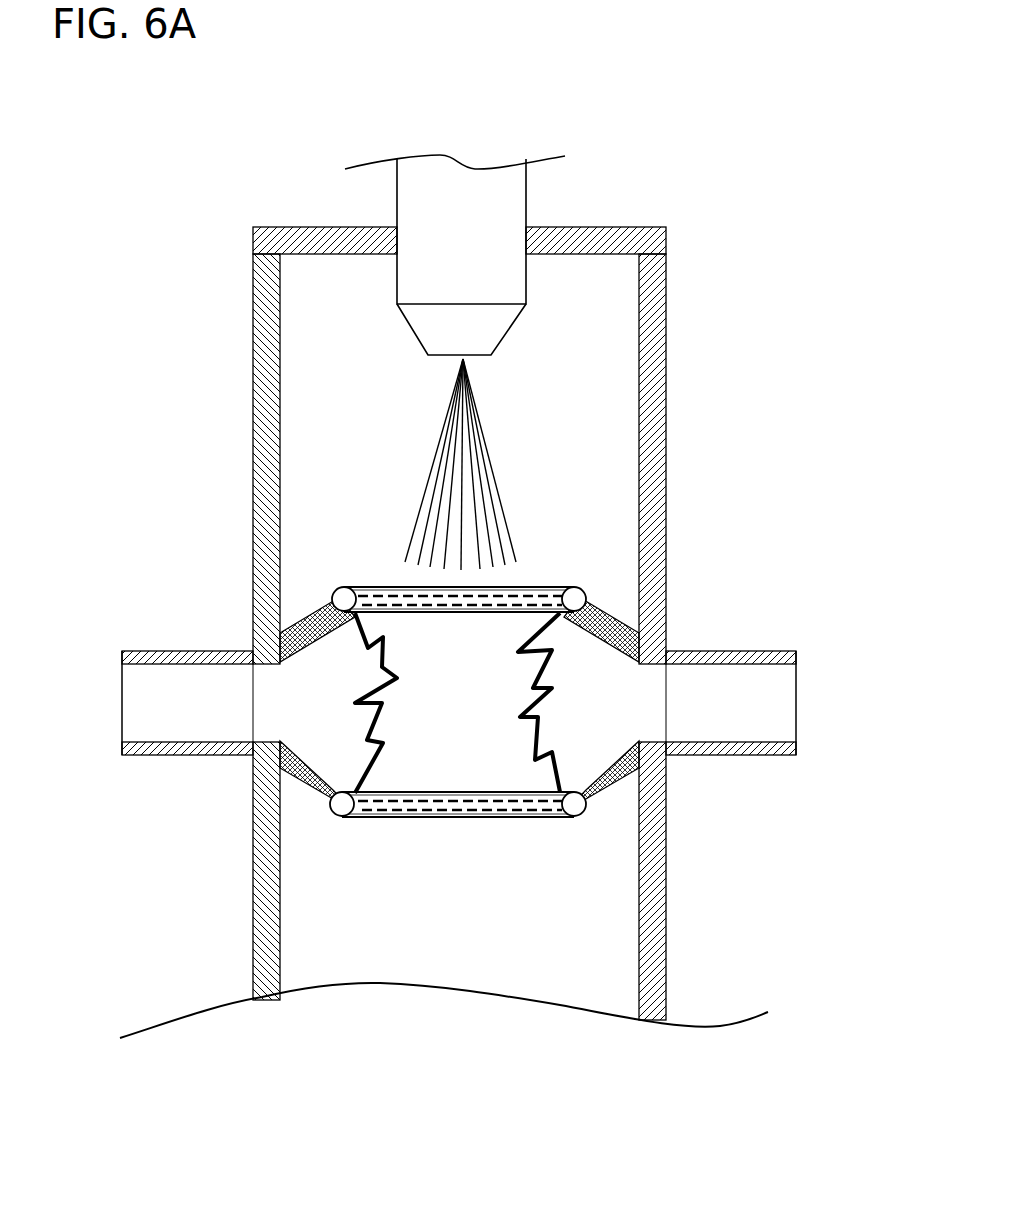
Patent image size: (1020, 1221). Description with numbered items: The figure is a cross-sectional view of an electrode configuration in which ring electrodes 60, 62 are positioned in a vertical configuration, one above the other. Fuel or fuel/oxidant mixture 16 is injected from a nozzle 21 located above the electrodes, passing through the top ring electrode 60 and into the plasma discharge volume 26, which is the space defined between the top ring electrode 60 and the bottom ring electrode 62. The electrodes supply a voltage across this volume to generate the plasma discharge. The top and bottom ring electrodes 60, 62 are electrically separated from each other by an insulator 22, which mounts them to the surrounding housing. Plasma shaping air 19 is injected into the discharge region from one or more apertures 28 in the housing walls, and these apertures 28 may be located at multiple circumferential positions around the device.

The fuel or fuel/oxidant mixture 16 is at (487, 485).
The plasma shaping air 19 is at (108, 700).
The nozzle 21 is at (449, 332).
The insulator 22 is at (613, 783).
The plasma discharge volume 26 is at (458, 702).
The apertures 28 is at (162, 715).
The top ring electrode 60 is at (343, 598).
The bottom ring electrode 62 is at (380, 803).